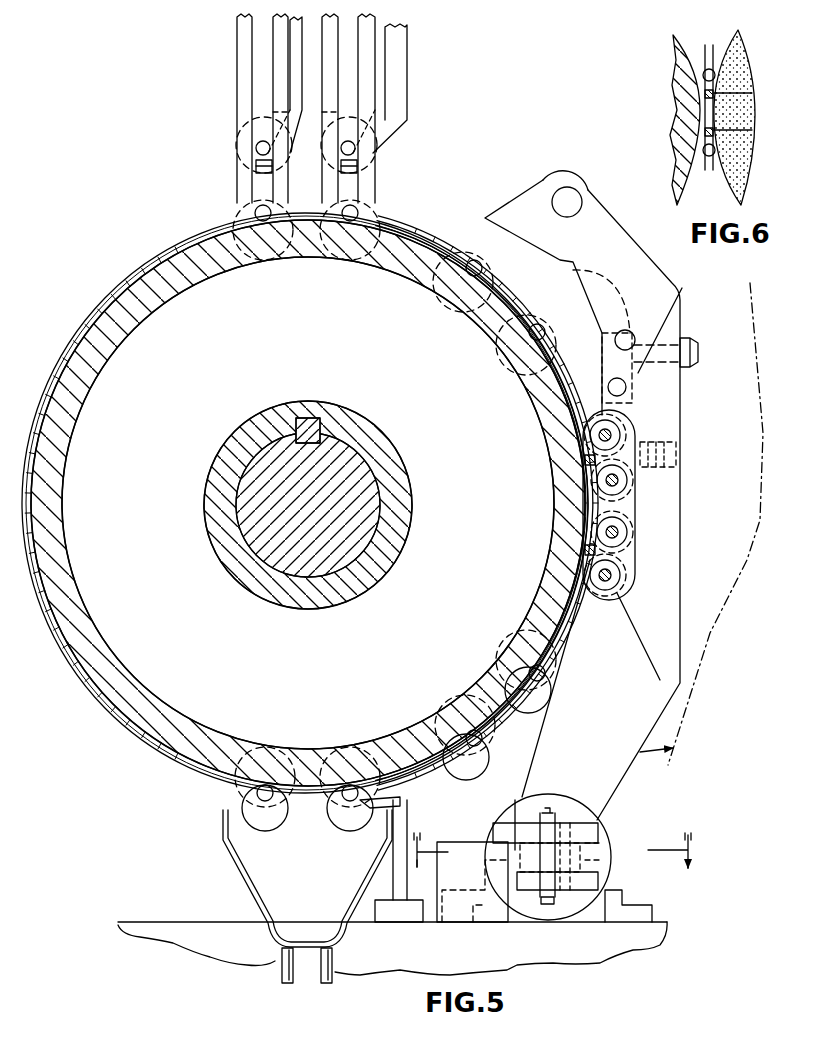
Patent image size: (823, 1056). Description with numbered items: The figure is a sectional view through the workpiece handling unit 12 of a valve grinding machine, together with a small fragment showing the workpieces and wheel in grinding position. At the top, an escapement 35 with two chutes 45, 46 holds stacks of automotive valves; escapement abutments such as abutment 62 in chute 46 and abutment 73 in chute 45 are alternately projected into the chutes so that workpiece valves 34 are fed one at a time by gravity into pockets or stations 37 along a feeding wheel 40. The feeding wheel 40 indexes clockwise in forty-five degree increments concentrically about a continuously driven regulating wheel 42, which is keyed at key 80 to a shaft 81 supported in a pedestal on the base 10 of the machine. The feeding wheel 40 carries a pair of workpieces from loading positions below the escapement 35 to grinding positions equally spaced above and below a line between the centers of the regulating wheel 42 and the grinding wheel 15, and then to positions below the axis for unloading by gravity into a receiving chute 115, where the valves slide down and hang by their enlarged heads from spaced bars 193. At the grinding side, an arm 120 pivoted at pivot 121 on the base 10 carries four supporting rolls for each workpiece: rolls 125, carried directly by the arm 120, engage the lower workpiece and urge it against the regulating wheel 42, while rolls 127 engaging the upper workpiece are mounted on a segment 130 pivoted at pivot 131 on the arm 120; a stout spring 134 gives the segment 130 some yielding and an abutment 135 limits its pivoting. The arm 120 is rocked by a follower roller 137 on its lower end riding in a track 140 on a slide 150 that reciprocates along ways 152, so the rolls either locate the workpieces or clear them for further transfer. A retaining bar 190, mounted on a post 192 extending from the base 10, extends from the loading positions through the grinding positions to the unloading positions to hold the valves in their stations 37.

In FIG. 5, the base 10 is at (228, 950).
In FIG. 5, the workpiece handling unit 12 is at (186, 184).
In FIG. 5, the grinding wheel 15 is at (698, 318).
In FIG. 6, the grinding wheel 15 is at (750, 52).
In FIG. 5, the workpiece valves 34 is at (257, 148).
In FIG. 6, the workpiece valves 34 is at (714, 93).
In FIG. 5, the escapement 35 is at (232, 72).
In FIG. 5, the pockets or stations 37 is at (345, 232).
In FIG. 5, the feeding wheel 40 is at (183, 240).
In FIG. 5, the regulating wheel 42 is at (135, 315).
In FIG. 6, the regulating wheel 42 is at (678, 70).
In FIG. 5, the chute 45 is at (258, 37).
In FIG. 5, the chute 46 is at (350, 85).
In FIG. 5, the escapement abutment 62 is at (340, 166).
In FIG. 5, the escapement abutment 73 is at (255, 165).
In FIG. 5, the key 80 is at (310, 430).
In FIG. 5, the shaft 81 is at (355, 545).
In FIG. 5, the receiving chute 115 is at (275, 862).
In FIG. 5, the arm 120 is at (642, 266).
In FIG. 5, the pivot 121 is at (568, 200).
In FIG. 5, the rolls 125 is at (628, 532).
In FIG. 6, the rolls 125 is at (714, 130).
In FIG. 5, the rolls 127 is at (588, 432).
In FIG. 6, the rolls 127 is at (706, 55).
In FIG. 5, the segment 130 is at (640, 445).
In FIG. 5, the pivot 131 is at (626, 388).
In FIG. 5, the spring 134 is at (658, 473).
In FIG. 5, the abutment 135 is at (630, 333).
In FIG. 5, the follower roller 137 is at (522, 892).
In FIG. 5, the track 140 is at (525, 848).
In FIG. 5, the slide 150 is at (492, 913).
In FIG. 5, the ways 152 is at (460, 910).
In FIG. 5, the retaining bar 190 is at (430, 228).
In FIG. 5, the post 192 is at (405, 830).
In FIG. 5, the spaced bars 193 is at (323, 985).